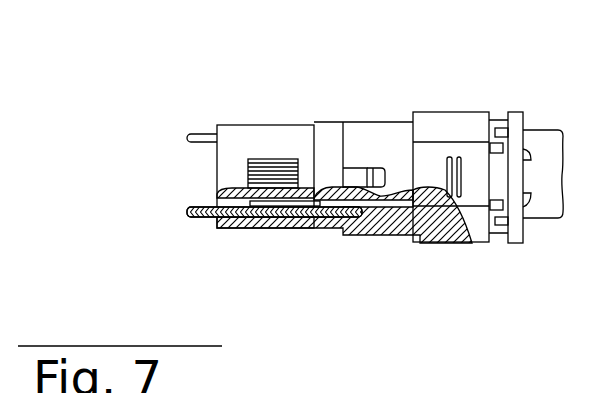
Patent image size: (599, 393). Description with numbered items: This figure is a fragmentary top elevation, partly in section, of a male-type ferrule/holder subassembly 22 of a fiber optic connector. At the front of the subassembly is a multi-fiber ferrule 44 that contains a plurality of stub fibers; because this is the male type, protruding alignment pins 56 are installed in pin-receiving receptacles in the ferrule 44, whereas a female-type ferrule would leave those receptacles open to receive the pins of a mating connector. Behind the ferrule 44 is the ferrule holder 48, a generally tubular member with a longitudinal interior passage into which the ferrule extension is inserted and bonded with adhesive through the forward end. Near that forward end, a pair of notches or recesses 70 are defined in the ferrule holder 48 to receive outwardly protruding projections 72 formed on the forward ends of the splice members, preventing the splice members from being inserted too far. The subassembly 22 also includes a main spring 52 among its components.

The ferrule/holder subassembly 22 is at (314, 198).
The multi-fiber ferrule 44 is at (267, 137).
The ferrule holder 48 is at (455, 122).
The main spring 52 is at (502, 392).
The alignment pins 56 is at (195, 133).
The notches or recesses 70 is at (355, 170).
The outwardly protruding projections 72 is at (380, 170).